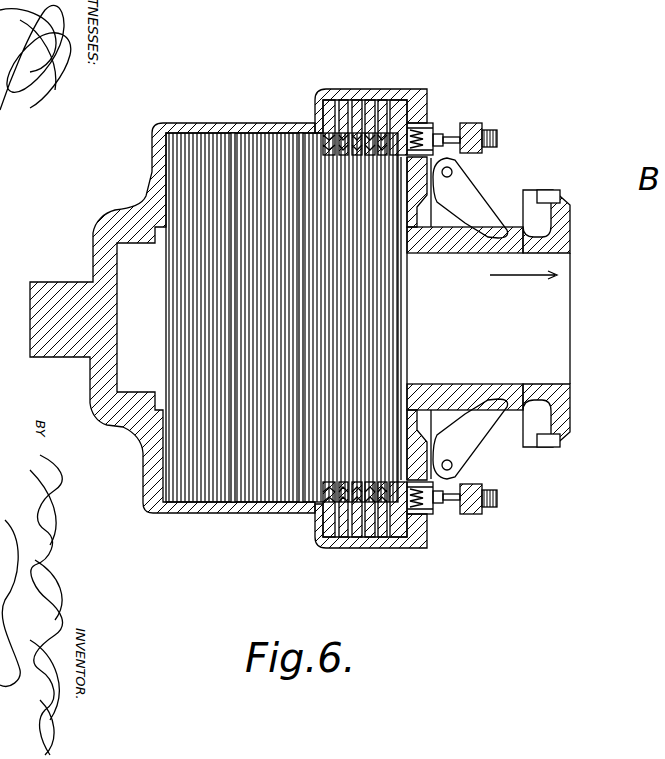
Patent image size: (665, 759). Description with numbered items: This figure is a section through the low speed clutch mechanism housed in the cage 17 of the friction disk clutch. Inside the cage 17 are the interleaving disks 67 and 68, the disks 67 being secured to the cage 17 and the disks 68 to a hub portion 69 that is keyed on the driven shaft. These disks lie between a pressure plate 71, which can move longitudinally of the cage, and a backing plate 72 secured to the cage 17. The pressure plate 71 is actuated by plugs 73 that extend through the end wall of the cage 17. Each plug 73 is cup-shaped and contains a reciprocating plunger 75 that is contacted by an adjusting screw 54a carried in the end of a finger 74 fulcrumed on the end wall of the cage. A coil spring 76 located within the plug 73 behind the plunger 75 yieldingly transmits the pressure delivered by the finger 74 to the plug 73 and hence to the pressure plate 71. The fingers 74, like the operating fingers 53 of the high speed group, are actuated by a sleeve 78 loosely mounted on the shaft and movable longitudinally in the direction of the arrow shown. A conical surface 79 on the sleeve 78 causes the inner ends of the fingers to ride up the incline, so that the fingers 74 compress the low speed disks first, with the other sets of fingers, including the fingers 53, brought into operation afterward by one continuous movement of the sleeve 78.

The cage 17 is at (157, 178).
The interleaving disks 67 is at (387, 100).
The interleaving disks 68 is at (387, 247).
The hub portion 69 is at (402, 330).
The pressure plate 71 is at (400, 97).
The backing plate 72 is at (333, 97).
The plug 73 is at (432, 123).
The finger 74 is at (470, 203).
The plunger 75 is at (448, 133).
The coil spring 76 is at (420, 517).
The sleeve 78 is at (565, 218).
The conical surface 79 is at (480, 383).
The operating finger 53 is at (664, 289).
The adjusting screw 54a is at (480, 132).